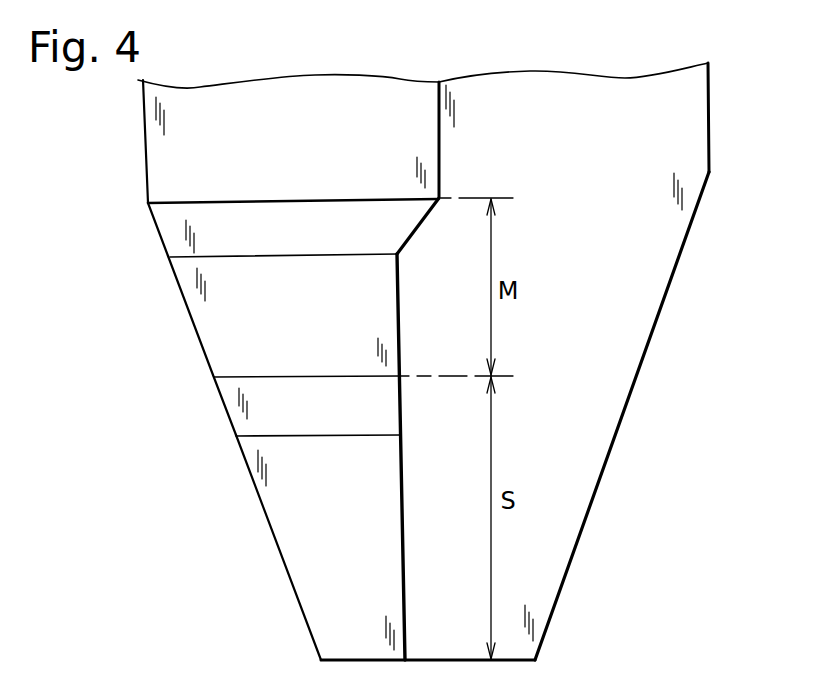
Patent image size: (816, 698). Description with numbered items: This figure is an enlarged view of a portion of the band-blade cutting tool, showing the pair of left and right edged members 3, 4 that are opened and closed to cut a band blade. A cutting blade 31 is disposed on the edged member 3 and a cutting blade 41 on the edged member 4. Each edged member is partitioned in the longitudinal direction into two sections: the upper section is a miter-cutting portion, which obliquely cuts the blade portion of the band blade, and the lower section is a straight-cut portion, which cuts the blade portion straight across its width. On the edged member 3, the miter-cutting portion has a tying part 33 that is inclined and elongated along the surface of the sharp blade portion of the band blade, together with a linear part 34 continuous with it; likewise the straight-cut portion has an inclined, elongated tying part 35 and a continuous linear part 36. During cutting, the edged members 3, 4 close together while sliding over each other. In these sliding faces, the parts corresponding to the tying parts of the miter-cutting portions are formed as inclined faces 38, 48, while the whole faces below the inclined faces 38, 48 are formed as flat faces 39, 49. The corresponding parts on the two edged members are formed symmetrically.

The edged member 3 is at (146, 143).
The edged member 4 is at (709, 126).
The cutting blade 31 is at (207, 358).
The tying part 33 is at (165, 240).
The linear part 34 is at (197, 308).
The tying part 35 is at (237, 421).
The linear part 36 is at (278, 518).
The inclined face 38 is at (421, 221).
The inclined face 48 is at (293, 226).
The flat face 39 is at (408, 477).
The flat face 49 is at (401, 457).
The cutting blade 41 is at (647, 350).